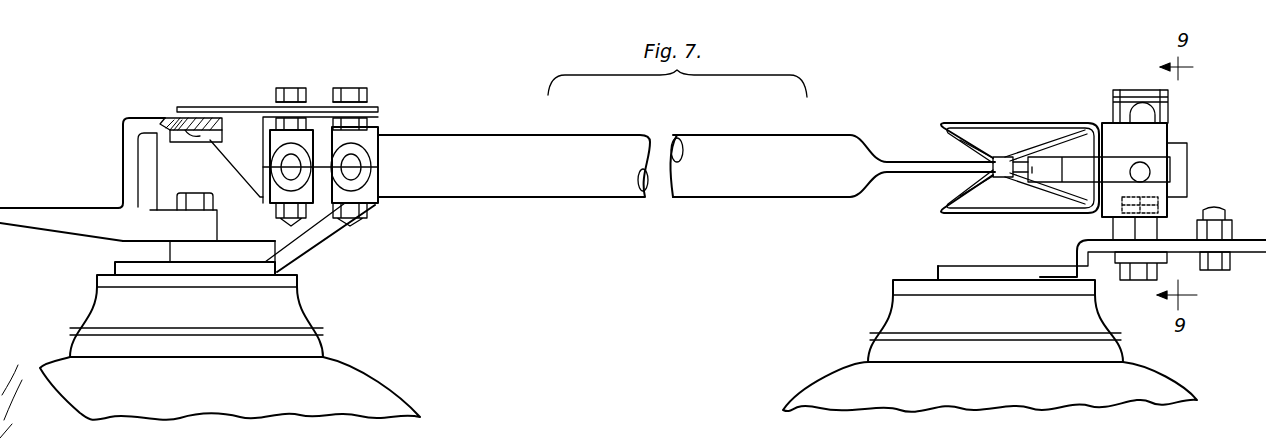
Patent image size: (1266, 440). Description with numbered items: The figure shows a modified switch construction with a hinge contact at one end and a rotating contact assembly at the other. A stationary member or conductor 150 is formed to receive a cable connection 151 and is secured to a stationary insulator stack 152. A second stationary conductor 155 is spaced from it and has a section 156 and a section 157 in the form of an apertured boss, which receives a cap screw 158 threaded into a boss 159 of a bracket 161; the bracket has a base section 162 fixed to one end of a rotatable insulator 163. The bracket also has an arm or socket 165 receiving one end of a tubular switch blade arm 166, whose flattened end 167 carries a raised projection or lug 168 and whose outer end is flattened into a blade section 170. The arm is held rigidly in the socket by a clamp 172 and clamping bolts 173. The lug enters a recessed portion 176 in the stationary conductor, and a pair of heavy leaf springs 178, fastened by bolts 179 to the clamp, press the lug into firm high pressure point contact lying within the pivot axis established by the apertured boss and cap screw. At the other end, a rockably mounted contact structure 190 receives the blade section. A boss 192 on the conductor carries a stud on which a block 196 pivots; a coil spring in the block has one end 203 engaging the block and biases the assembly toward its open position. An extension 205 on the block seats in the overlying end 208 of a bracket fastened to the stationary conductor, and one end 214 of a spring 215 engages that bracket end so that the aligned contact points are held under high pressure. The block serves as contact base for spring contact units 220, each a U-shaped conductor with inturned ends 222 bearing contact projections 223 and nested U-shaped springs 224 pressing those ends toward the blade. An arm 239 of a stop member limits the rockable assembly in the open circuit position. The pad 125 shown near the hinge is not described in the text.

The pad 125 is at (174, 118).
The stationary member or conductor 150 is at (962, 262).
The cable connection 151 is at (1240, 239).
The stationary insulator stack 152 is at (857, 357).
The second stationary member or conductor 155 is at (72, 207).
The section 156 is at (163, 119).
The section (apertured boss) 157 is at (195, 225).
The cap screw 158 is at (192, 193).
The boss 159 is at (188, 262).
The bracket 161 is at (337, 250).
The base section 162 is at (218, 268).
The rotatable insulator 163 is at (358, 354).
The arm or socket 165 is at (380, 183).
The switch blade arm 166 is at (693, 187).
The flattened end 167 is at (222, 128).
The raised projection or lug 168 is at (208, 108).
The blade section 170 is at (897, 165).
The clamp 172 is at (373, 125).
The clamping bolts 173 is at (295, 122).
The recessed portion 176 is at (165, 121).
The leaf springs 178 is at (248, 108).
The bolts 179 is at (289, 88).
The rockably mounted contact structure 190 is at (1050, 113).
The boss 192 is at (1115, 228).
The block 196 is at (1167, 141).
The spring end 203 is at (1162, 212).
The extension 205 is at (1152, 119).
The overlying end 208 is at (1170, 102).
The spring end 214 is at (1135, 90).
The spring 215 is at (1138, 162).
The spring contact units 220 is at (985, 125).
The inturned ends 222 is at (973, 148).
The contact projections 223 is at (990, 180).
The springs 224 is at (1028, 198).
The arm 239 is at (1188, 178).